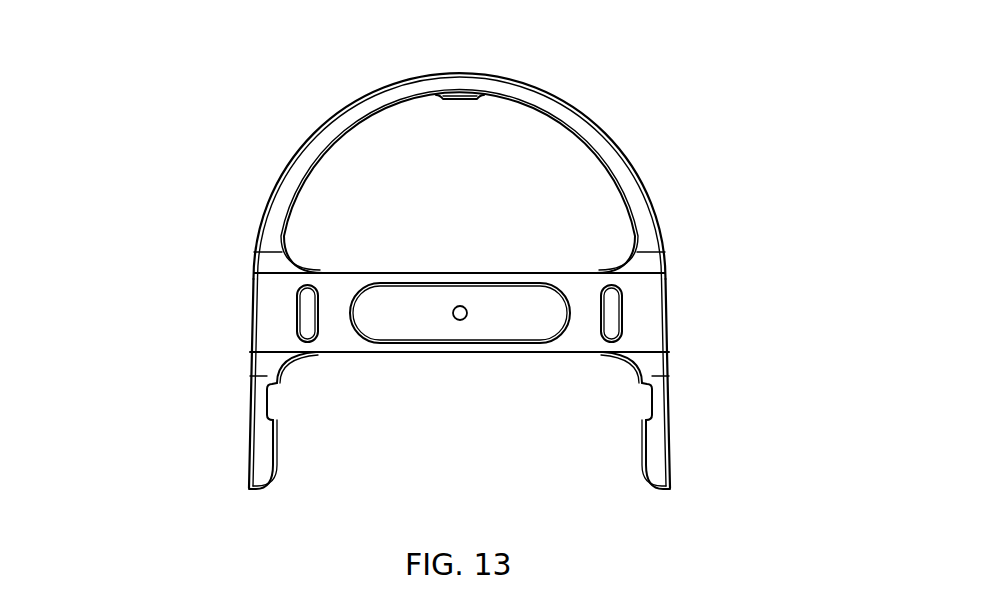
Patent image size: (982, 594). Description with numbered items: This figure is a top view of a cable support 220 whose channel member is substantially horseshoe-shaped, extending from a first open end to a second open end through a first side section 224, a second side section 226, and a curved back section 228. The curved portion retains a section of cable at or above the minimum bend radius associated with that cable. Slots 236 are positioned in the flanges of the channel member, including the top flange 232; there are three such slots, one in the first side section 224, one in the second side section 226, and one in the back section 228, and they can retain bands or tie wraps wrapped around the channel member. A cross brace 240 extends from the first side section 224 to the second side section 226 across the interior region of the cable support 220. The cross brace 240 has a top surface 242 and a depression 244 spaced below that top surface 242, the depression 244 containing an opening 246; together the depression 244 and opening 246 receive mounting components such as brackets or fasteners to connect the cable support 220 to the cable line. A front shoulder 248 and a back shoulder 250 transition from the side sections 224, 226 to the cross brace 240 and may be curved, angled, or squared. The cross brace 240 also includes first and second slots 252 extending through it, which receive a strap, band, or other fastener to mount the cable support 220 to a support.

The cable support 220 is at (271, 138).
The first side section 224 is at (673, 458).
The second side section 226 is at (249, 393).
The curved back section 228 is at (595, 121).
The top flange 232 is at (263, 441).
The slot 236 is at (468, 93).
The cross brace 240 is at (277, 322).
The top surface 242 is at (655, 312).
The depression 244 is at (504, 320).
The opening 246 is at (455, 319).
The front shoulder 248 is at (658, 362).
The back shoulder 250 is at (657, 267).
The slot 252 is at (302, 302).